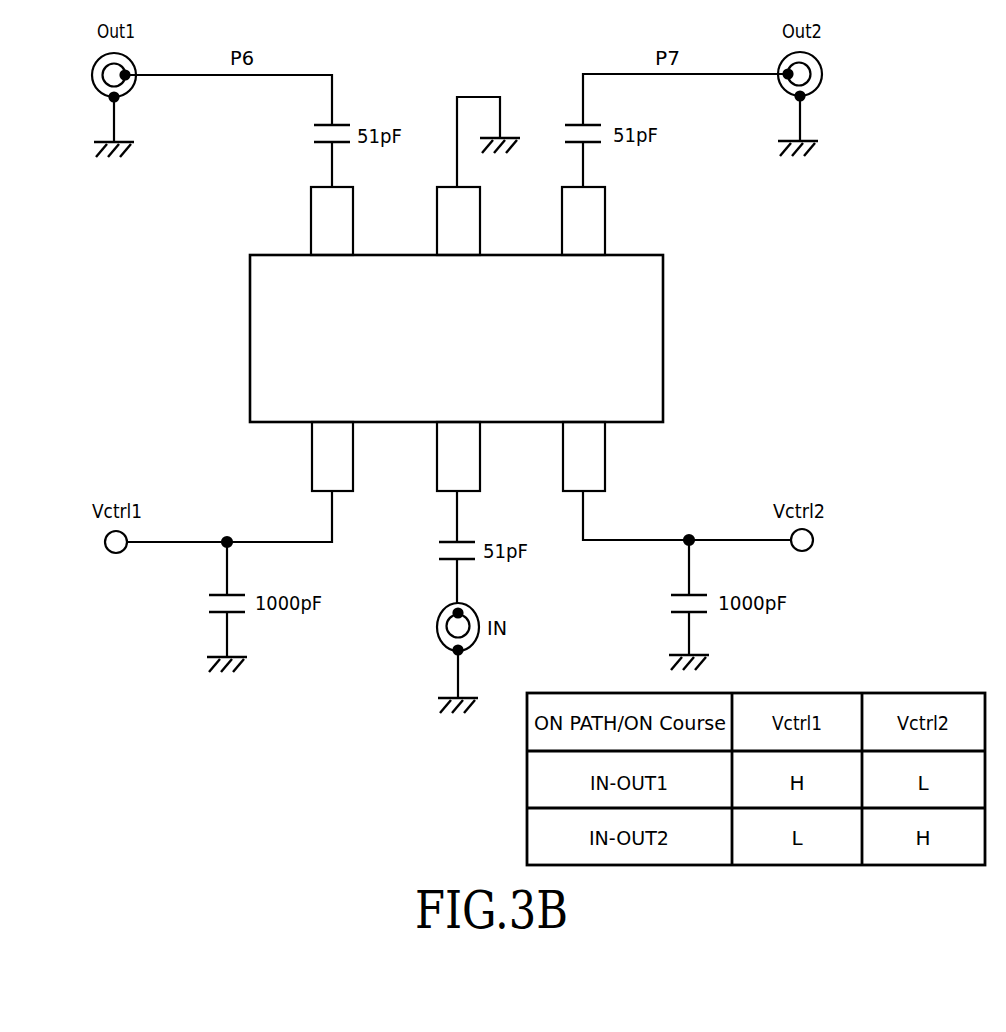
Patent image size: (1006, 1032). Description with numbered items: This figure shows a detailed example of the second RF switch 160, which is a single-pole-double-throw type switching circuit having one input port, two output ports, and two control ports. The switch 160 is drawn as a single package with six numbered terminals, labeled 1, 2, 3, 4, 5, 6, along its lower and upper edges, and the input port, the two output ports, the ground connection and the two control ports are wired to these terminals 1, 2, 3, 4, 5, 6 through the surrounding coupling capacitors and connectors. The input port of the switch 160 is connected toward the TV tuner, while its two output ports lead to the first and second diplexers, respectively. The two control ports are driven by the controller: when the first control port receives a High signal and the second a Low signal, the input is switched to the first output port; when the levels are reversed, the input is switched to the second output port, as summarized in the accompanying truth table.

The second RF switch 160 is at (408, 339).
The pin 1 (control terminal Vctrl1) 1 is at (332, 456).
The pin 2 (input terminal) 2 is at (458, 456).
The pin 3 (control terminal Vctrl2) 3 is at (584, 456).
The pin 4 (output terminal Out2) 4 is at (583, 221).
The pin 5 (ground terminal) 5 is at (458, 221).
The pin 6 (output terminal Out1) 6 is at (332, 221).